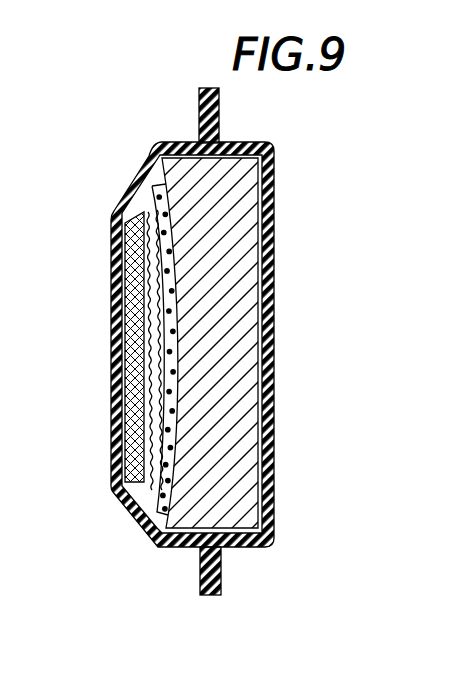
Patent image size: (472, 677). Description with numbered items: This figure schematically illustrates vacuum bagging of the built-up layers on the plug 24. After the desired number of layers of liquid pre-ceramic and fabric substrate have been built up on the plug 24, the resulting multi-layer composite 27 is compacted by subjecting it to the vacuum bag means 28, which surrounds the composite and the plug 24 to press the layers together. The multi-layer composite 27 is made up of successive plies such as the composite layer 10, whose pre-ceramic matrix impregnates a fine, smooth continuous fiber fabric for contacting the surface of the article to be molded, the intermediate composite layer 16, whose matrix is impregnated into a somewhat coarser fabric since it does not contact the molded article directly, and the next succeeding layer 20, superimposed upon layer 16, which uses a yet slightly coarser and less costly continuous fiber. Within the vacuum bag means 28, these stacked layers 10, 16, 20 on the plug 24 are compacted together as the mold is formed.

The composite layer 10 is at (152, 522).
The composite layer 16 is at (150, 212).
The layer 20 is at (130, 387).
The plug 24 is at (243, 393).
The multi-layer composite 27 is at (123, 272).
The vacuum bag means 28 is at (276, 306).